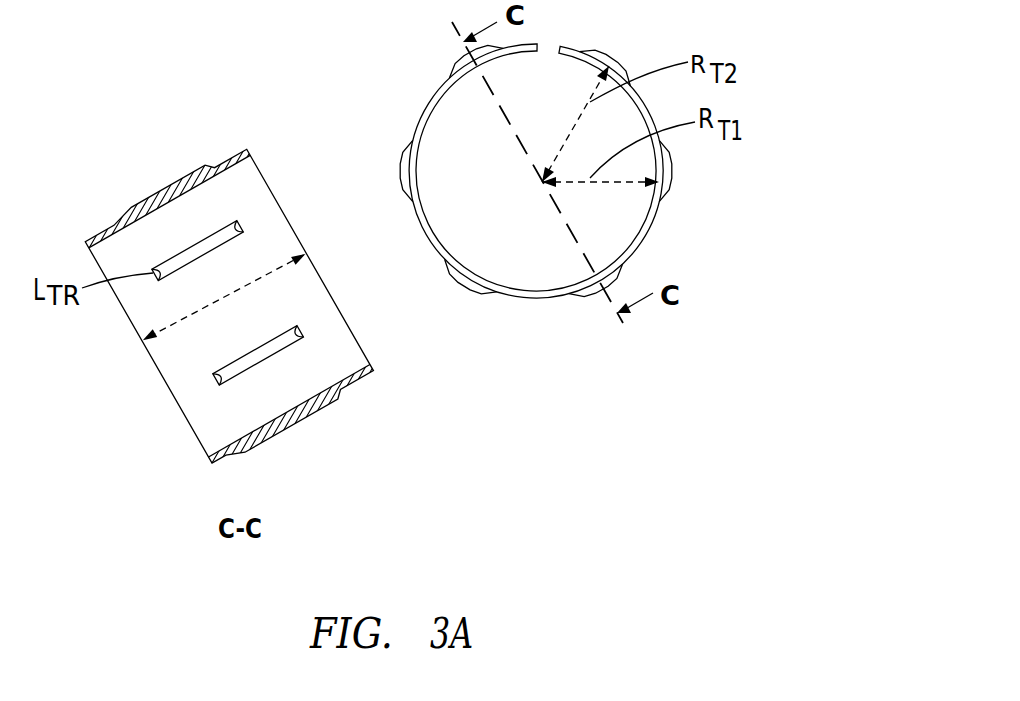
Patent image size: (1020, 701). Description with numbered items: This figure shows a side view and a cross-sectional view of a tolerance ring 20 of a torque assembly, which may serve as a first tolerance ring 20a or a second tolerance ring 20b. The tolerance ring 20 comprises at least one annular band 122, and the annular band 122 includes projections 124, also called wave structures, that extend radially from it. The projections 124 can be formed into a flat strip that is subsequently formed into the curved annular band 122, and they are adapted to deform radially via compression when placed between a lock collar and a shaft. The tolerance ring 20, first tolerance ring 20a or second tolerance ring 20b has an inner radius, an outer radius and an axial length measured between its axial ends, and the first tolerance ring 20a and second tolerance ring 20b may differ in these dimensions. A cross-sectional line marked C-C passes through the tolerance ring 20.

The annular band 122 is at (189, 426).
The projections 124 is at (187, 319).
The tolerance ring 20 is at (624, 171).
The first tolerance ring 20a is at (558, 218).
The second tolerance ring 20b is at (515, 123).